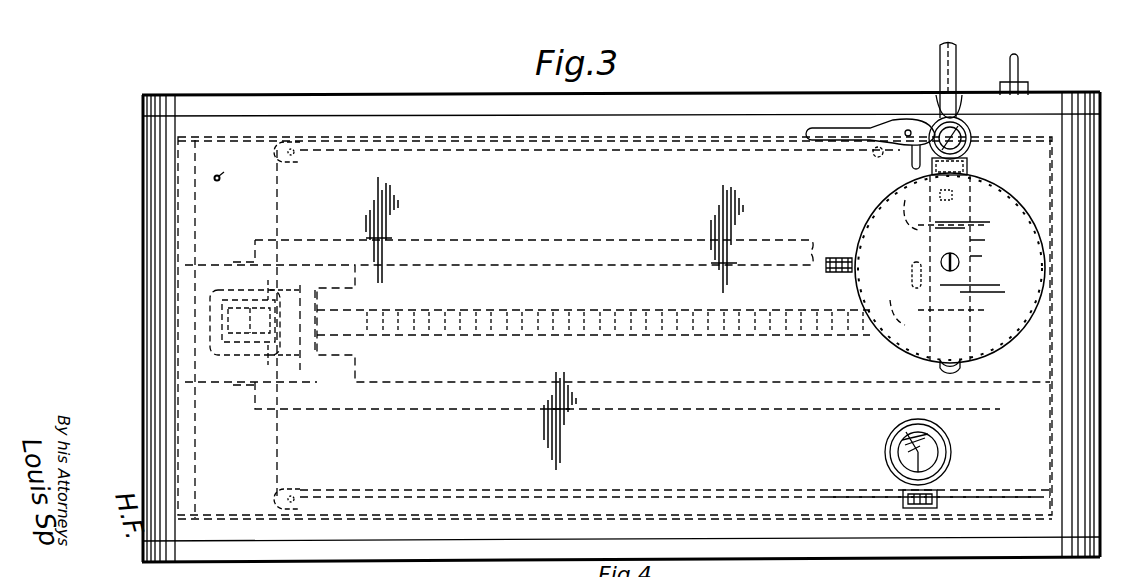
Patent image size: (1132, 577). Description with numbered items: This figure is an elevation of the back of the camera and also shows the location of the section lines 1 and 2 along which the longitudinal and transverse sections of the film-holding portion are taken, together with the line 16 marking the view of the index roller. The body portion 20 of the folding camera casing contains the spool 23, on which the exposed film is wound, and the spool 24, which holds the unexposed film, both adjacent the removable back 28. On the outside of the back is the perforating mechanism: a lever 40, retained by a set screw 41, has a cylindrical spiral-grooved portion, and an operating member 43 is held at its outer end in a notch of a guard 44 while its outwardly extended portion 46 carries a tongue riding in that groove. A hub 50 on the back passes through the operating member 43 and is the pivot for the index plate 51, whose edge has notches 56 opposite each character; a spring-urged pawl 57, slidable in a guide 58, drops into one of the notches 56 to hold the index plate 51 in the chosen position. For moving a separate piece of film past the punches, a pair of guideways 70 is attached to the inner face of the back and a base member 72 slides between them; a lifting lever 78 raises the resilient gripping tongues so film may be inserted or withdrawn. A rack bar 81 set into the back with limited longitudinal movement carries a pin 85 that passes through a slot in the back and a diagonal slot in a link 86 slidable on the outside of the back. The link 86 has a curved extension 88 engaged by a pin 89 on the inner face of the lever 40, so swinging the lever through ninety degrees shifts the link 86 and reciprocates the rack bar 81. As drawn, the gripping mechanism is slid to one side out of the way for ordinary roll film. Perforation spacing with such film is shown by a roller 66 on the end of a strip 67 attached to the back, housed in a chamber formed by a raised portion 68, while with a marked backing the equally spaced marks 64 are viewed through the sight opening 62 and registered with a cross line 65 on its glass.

The section line 1 is at (172, 193).
The section line 2 is at (975, 62).
The view line 16 is at (838, 505).
The body portion of the casing 20 is at (266, 562).
The spool 23 is at (1040, 128).
The spool 24 is at (234, 517).
The removable back 28 is at (375, 540).
The lever 40 is at (838, 128).
The set screw 41 is at (962, 140).
The operating member 43 is at (1040, 128).
The guard 44 is at (960, 368).
The outwardly extended portion 46 is at (967, 166).
The hub 50 is at (954, 252).
The index plate 51 is at (1026, 270).
The notches 56 is at (875, 208).
The pawl 57 is at (852, 258).
The guide 58 is at (832, 272).
The sight opening 62 is at (893, 448).
The equally spaced marks 64 is at (905, 452).
The cross line 65 is at (892, 446).
The roller 66 is at (947, 494).
The strip 67 is at (797, 490).
The raised portion 68 is at (904, 508).
The guideways 70 is at (489, 240).
The base member 72 is at (210, 382).
The lifting lever 78 is at (232, 264).
The rack bar 81 is at (715, 340).
The pin 85 is at (905, 325).
The link 86 is at (910, 170).
The curved extension 88 is at (935, 118).
The pin 89 is at (890, 140).